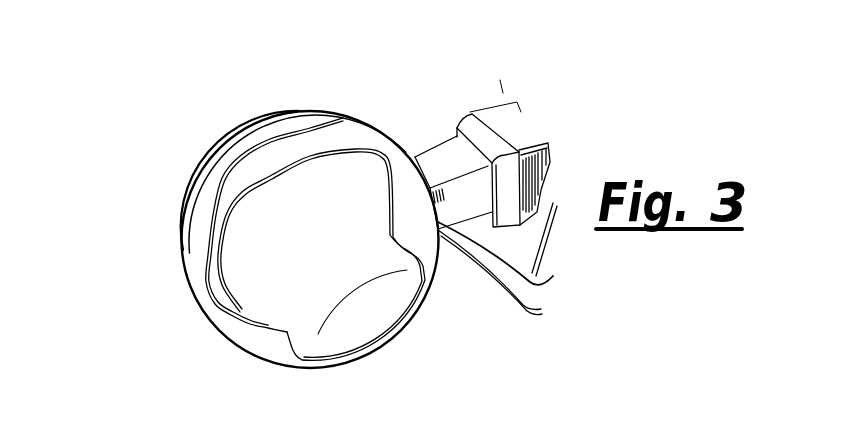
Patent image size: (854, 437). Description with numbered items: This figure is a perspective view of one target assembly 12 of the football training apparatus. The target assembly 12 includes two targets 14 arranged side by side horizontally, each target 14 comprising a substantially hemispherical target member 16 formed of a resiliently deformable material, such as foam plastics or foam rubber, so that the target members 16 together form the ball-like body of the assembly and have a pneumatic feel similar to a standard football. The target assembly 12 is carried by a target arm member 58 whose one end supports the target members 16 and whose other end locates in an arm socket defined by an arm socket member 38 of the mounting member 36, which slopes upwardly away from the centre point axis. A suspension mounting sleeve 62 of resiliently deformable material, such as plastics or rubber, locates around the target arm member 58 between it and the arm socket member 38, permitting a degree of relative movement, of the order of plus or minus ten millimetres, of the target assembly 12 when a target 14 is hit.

The target assembly 12 is at (172, 167).
The target 14 is at (267, 110).
The target member 16 is at (384, 311).
The mounting member 36 is at (520, 255).
The arm socket member 38 is at (498, 118).
The target arm member 58 is at (432, 168).
The suspension mounting sleeve 62 is at (457, 122).